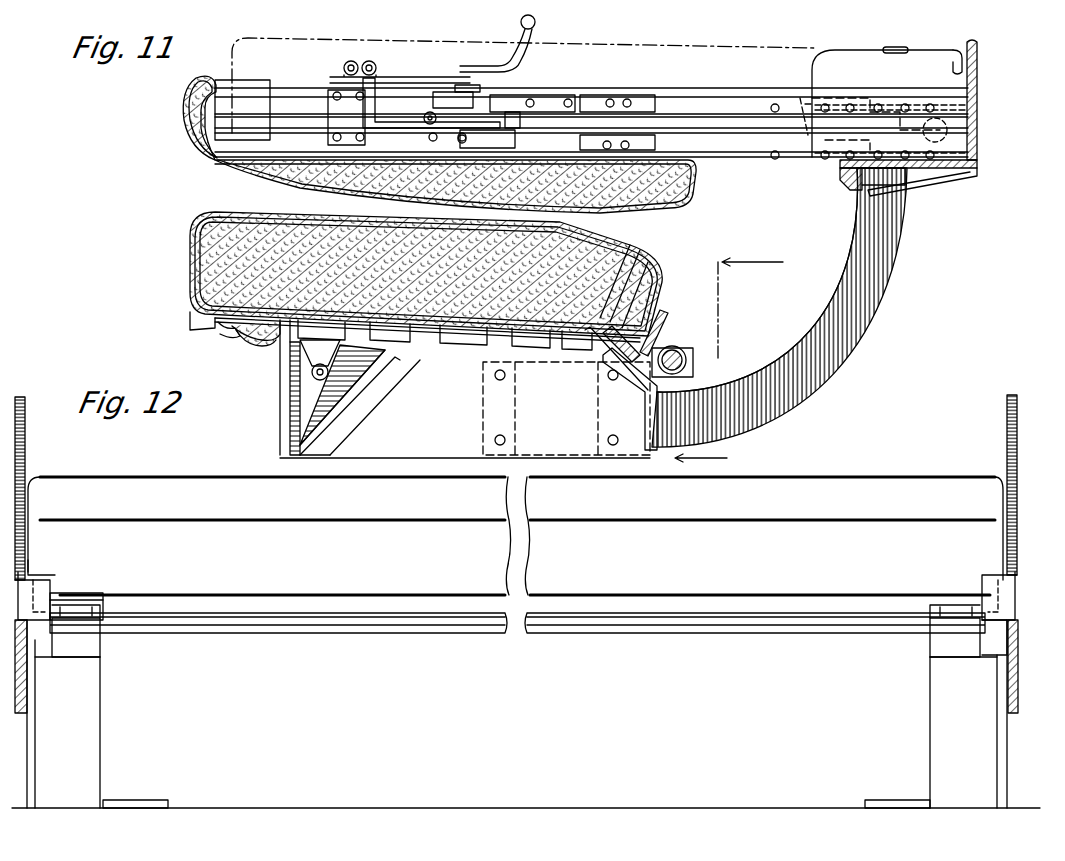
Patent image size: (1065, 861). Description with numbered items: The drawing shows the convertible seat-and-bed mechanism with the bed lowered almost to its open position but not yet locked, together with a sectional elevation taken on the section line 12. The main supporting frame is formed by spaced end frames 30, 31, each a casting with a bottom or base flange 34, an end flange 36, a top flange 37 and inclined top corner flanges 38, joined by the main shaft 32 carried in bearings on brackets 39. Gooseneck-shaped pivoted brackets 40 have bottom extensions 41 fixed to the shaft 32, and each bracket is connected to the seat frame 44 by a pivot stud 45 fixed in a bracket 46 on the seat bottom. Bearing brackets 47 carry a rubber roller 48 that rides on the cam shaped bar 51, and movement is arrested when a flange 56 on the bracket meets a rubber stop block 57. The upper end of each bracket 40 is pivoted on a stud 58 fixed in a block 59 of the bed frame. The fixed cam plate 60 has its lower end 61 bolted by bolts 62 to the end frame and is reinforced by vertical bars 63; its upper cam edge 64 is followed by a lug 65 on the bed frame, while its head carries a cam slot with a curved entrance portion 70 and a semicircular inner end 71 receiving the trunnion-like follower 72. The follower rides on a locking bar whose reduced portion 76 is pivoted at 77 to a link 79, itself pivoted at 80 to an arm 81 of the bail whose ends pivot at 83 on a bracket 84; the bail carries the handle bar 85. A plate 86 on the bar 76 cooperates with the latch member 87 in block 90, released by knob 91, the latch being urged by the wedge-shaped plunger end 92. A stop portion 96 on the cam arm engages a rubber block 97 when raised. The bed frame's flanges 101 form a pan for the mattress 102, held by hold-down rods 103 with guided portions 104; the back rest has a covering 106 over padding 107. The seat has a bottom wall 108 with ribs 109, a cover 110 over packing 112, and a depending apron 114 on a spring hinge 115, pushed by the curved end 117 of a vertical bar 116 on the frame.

In FIG. 11, the section line 12 is at (716, 359).
In FIG. 12, the end frame 30 is at (102, 690).
In FIG. 11, the end frame 31 is at (306, 446).
In FIG. 12, the end frame 31 is at (928, 696).
In FIG. 11, the main shaft 32 is at (684, 354).
In FIG. 12, the main shaft 32 is at (466, 634).
In FIG. 12, the bottom or base flange 34 is at (138, 802).
In FIG. 12, the end flange 36 is at (104, 736).
In FIG. 11, the top flange 37 is at (470, 346).
In FIG. 11, the inclined top corner flange 38 is at (316, 428).
In FIG. 11, the bracket 39 is at (700, 365).
In FIG. 12, the bracket 39 is at (100, 652).
In FIG. 11, the pivoted member or bracket 40 is at (728, 196).
In FIG. 12, the pivoted member or bracket 40 is at (1010, 448).
In FIG. 11, the bottom extension 41 is at (670, 314).
In FIG. 12, the bottom extension 41 is at (54, 648).
In FIG. 11, the seat frame 44 is at (195, 220).
In FIG. 12, the seat frame 44 is at (176, 476).
In FIG. 11, the pivot stud 45 is at (640, 249).
In FIG. 11, the bracket 46 is at (568, 336).
In FIG. 12, the bracket 46 is at (50, 569).
In FIG. 11, the bearing bracket 47 is at (320, 359).
In FIG. 11, the rubber roller 48 is at (358, 378).
In FIG. 11, the cam shaped bar 51 is at (332, 408).
In FIG. 11, the flange 56 is at (602, 356).
In FIG. 12, the flange 56 is at (70, 604).
In FIG. 11, the cushioning rubber stop block 57 is at (596, 344).
In FIG. 12, the cushioning rubber stop block 57 is at (100, 600).
In FIG. 11, the stud 58 is at (586, 142).
In FIG. 12, the stud 58 is at (40, 562).
In FIG. 11, the block 59 is at (650, 114).
In FIG. 11, the cam plate 60 is at (882, 280).
In FIG. 12, the cam plate 60 is at (28, 690).
In FIG. 11, the lower end of cam plate 61 is at (545, 455).
In FIG. 12, the lower end of cam plate 61 is at (996, 652).
In FIG. 11, the bolt 62 is at (613, 434).
In FIG. 12, the vertically extending bar 63 is at (36, 736).
In FIG. 11, the upper cam edge 64 is at (790, 326).
In FIG. 11, the follower or lug 65 is at (848, 186).
In FIG. 11, the curved entrance portion 70 is at (978, 140).
In FIG. 11, the semicircular inner end 71 is at (826, 120).
In FIG. 11, the trunnion-like follower 72 is at (950, 130).
In FIG. 11, the reduced width portion of bar 76 is at (712, 128).
In FIG. 11, the pivotal connection 77 is at (426, 124).
In FIG. 11, the link 79 is at (378, 110).
In FIG. 11, the pivotal connection 80 is at (372, 62).
In FIG. 11, the arm of bail-shaped member 81 is at (458, 76).
In FIG. 11, the pivot 83 is at (358, 55).
In FIG. 11, the bracket 84 is at (338, 118).
In FIG. 11, the handle rod or bar 85 is at (536, 22).
In FIG. 11, the plate 86 is at (433, 98).
In FIG. 11, the latch member 87 is at (500, 112).
In FIG. 11, the block 90 is at (472, 139).
In FIG. 11, the knurled knob 91 is at (474, 77).
In FIG. 11, the wedge-shaped end of plunger 92 is at (532, 101).
In FIG. 11, the stop portion 96 is at (803, 100).
In FIG. 11, the block 97 is at (558, 95).
In FIG. 11, the flanges 101 is at (836, 50).
In FIG. 11, the mattress 102 is at (452, 42).
In FIG. 11, the hold-down rod 103 is at (910, 50).
In FIG. 11, the portion of rod 104 is at (952, 65).
In FIG. 11, the covering 106 is at (222, 172).
In FIG. 11, the padding material 107 is at (262, 178).
In FIG. 11, the main or bottom wall 108 is at (400, 340).
In FIG. 11, the rib 109 is at (440, 342).
In FIG. 11, the cover 110 is at (194, 258).
In FIG. 11, the packing material 112 is at (192, 240).
In FIG. 11, the movably depending apron 114 is at (266, 348).
In FIG. 11, the spring hinge 115 is at (218, 330).
In FIG. 11, the vertical bar 116 is at (280, 392).
In FIG. 11, the forwardly curved upper end 117 is at (236, 342).